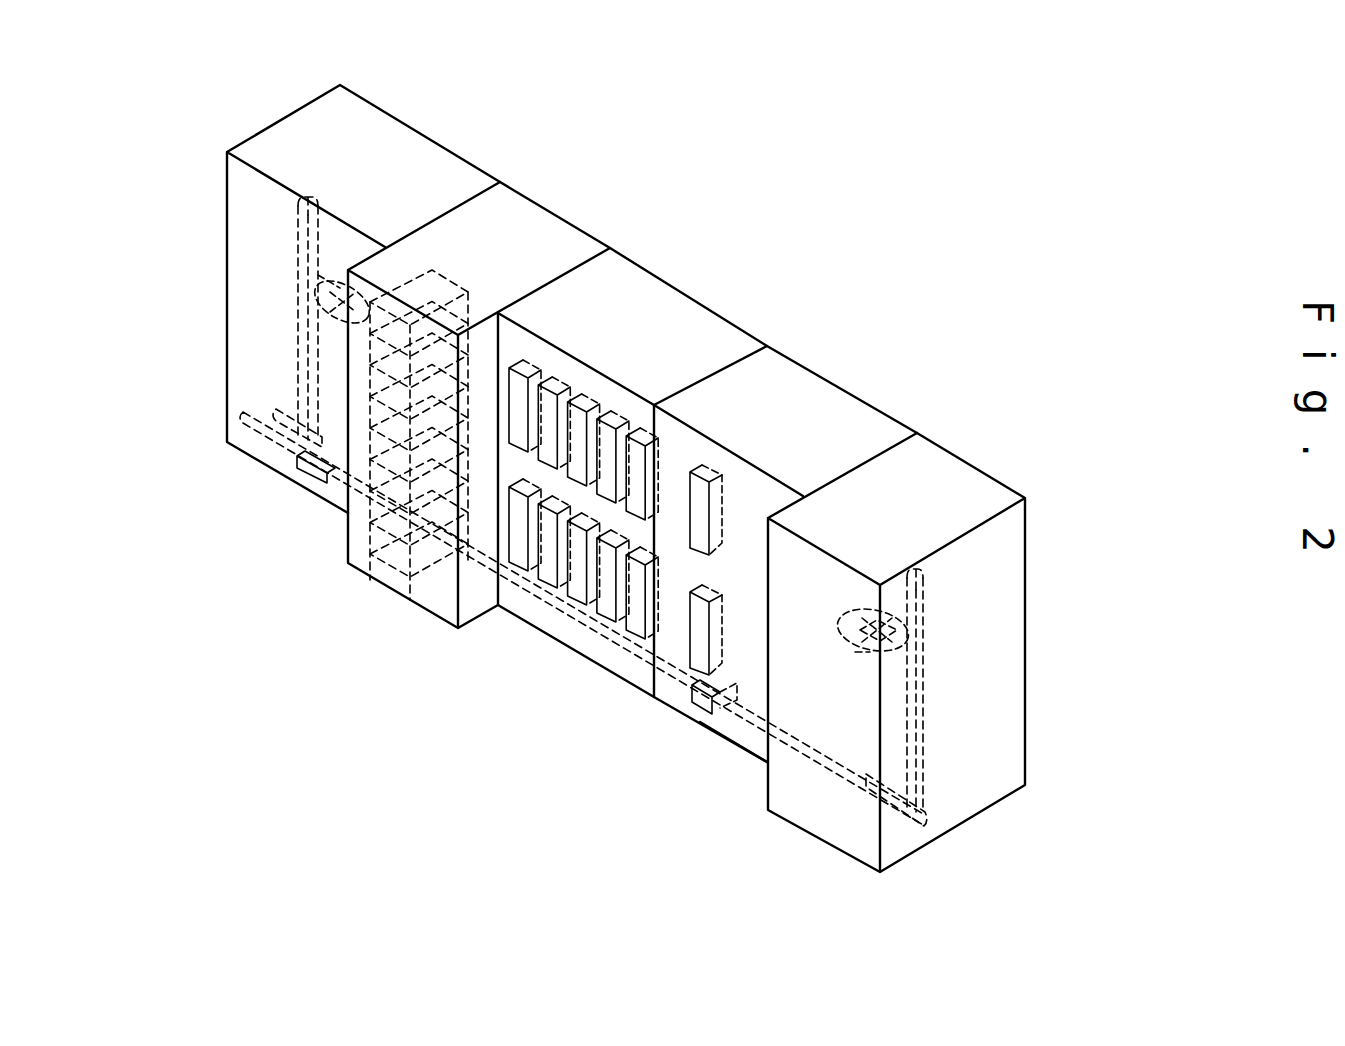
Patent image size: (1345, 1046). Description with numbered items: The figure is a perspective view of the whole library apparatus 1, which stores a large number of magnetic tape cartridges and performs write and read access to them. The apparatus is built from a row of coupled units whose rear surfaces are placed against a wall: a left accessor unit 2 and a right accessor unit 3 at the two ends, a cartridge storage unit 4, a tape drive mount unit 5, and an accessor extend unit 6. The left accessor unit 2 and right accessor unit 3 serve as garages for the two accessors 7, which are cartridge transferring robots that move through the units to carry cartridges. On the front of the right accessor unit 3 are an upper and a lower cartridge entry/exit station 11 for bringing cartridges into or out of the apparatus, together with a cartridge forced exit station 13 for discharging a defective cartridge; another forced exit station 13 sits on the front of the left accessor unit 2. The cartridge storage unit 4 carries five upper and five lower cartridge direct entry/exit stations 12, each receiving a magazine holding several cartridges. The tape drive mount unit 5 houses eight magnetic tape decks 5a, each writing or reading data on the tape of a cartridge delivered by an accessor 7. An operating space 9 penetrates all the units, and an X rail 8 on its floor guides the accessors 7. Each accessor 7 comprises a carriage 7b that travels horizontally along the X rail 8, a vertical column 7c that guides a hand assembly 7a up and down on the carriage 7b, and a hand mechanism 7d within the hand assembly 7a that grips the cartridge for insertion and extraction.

The library apparatus 1 is at (645, 201).
The left accessor unit 2 is at (399, 138).
The right accessor unit 3 is at (860, 420).
The cartridge storage unit 4 is at (728, 342).
The tape drive mount unit 5 is at (553, 233).
The magnetic tape deck 5a is at (458, 266).
The accessor extend unit 6 is at (976, 480).
The accessor 7 is at (298, 222).
The hand assembly 7a is at (330, 278).
The carriage 7b is at (270, 435).
The vertical column 7c is at (292, 350).
The hand mechanism 7d is at (338, 318).
The X rail 8 is at (802, 720).
The operating space 9 is at (750, 767).
The cartridge entry/exit station 11 is at (702, 482).
The cartridge direct entry/exit station 12 is at (556, 395).
The cartridge forced exit station 13 is at (306, 467).